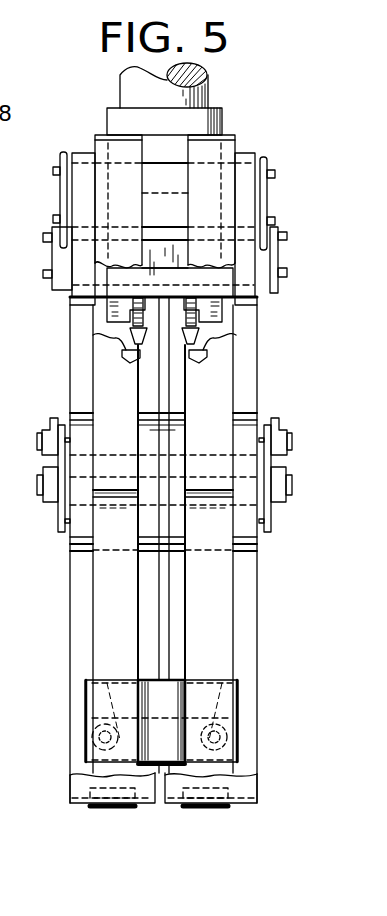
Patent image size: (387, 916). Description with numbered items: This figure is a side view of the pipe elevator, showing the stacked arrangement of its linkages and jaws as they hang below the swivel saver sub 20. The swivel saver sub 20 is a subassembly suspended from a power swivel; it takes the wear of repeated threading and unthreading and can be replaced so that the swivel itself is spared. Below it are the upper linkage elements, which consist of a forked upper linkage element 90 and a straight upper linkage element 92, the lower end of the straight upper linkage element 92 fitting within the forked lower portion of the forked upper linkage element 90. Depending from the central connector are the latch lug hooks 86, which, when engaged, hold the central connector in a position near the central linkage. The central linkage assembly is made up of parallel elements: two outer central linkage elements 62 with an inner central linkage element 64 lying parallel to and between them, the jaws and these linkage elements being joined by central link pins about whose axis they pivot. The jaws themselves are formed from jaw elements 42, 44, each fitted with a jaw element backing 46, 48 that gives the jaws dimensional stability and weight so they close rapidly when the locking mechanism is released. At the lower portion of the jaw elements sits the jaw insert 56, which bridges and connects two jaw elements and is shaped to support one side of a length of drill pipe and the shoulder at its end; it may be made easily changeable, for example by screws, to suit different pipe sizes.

The swivel saver sub 20 is at (118, 88).
The jaw element 42 is at (107, 190).
The jaw element 44 is at (207, 173).
The straight upper linkage element 92 is at (80, 258).
The forked upper linkage element 90 is at (247, 258).
The latch lug hook 86 is at (110, 313).
The outer central linkage element 62 is at (82, 413).
The inner central linkage element 64 is at (147, 547).
The jaw insert 56 is at (147, 727).
The jaw element backing 46 is at (78, 800).
The jaw element backing 48 is at (240, 807).